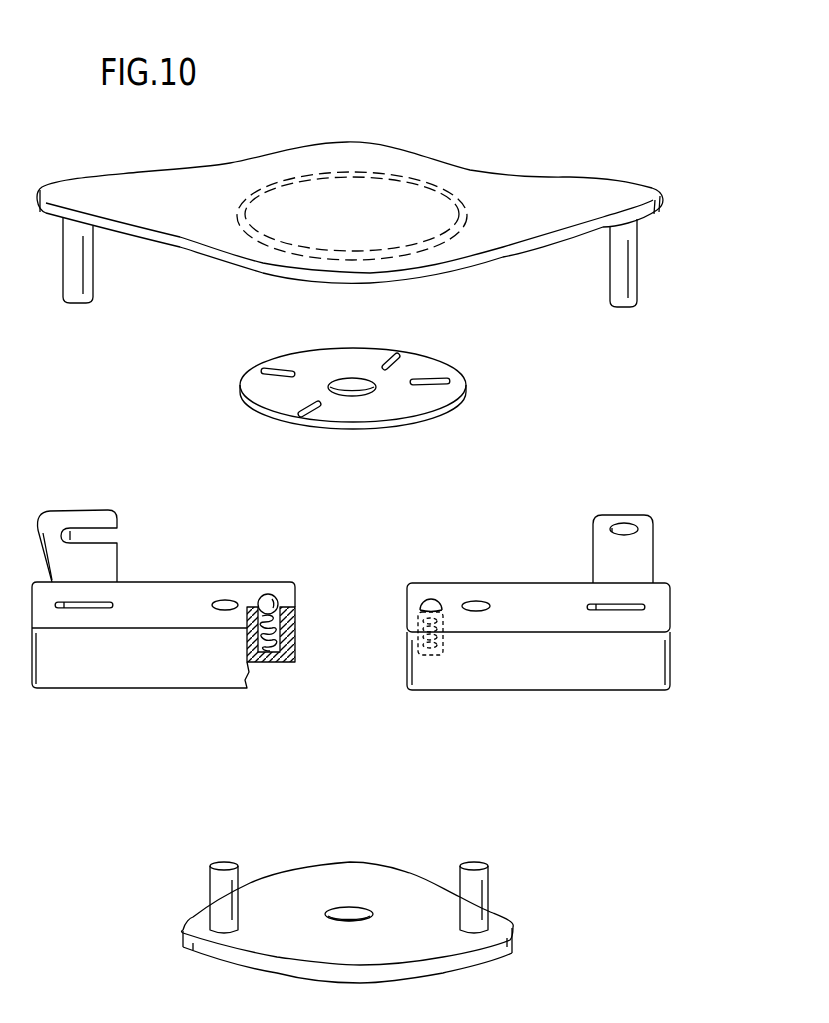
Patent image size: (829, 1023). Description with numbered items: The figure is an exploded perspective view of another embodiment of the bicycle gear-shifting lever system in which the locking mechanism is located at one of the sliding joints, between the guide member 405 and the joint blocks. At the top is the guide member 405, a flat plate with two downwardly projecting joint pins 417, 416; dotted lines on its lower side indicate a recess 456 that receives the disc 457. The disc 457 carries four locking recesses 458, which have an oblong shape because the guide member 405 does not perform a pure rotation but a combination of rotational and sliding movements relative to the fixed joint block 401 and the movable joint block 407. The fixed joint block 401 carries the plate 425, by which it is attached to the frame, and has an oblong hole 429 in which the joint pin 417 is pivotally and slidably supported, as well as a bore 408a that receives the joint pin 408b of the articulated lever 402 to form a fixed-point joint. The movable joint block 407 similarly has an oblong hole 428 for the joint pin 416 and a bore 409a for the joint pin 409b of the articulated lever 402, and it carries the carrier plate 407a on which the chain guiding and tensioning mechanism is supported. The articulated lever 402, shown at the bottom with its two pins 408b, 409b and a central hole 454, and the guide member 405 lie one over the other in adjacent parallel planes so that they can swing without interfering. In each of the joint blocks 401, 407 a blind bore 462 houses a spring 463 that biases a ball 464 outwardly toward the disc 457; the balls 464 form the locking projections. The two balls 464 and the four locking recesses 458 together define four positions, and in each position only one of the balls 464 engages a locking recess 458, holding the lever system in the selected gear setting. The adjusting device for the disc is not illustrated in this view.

The guide member 405 is at (542, 187).
The recess 456 is at (377, 177).
The joint pin 417 is at (77, 295).
The joint pin 416 is at (627, 302).
The disc 457 is at (417, 412).
The locking recesses 458 is at (400, 353).
The fixed joint block 401 is at (125, 677).
The plate 425 is at (103, 554).
The oblong hole 429 is at (83, 608).
The bore 408a is at (220, 597).
The blind bore 462 is at (282, 627).
The spring 463 is at (278, 632).
The ball 464 is at (268, 597).
The movable joint block 407 is at (538, 683).
The carrier plate 407a is at (598, 543).
The bore 409a is at (475, 605).
The oblong hole 428 is at (607, 608).
The articulated lever 402 is at (397, 973).
The joint pin 408b is at (215, 888).
The joint pin 409b is at (482, 892).
The threaded hole 454 is at (343, 912).